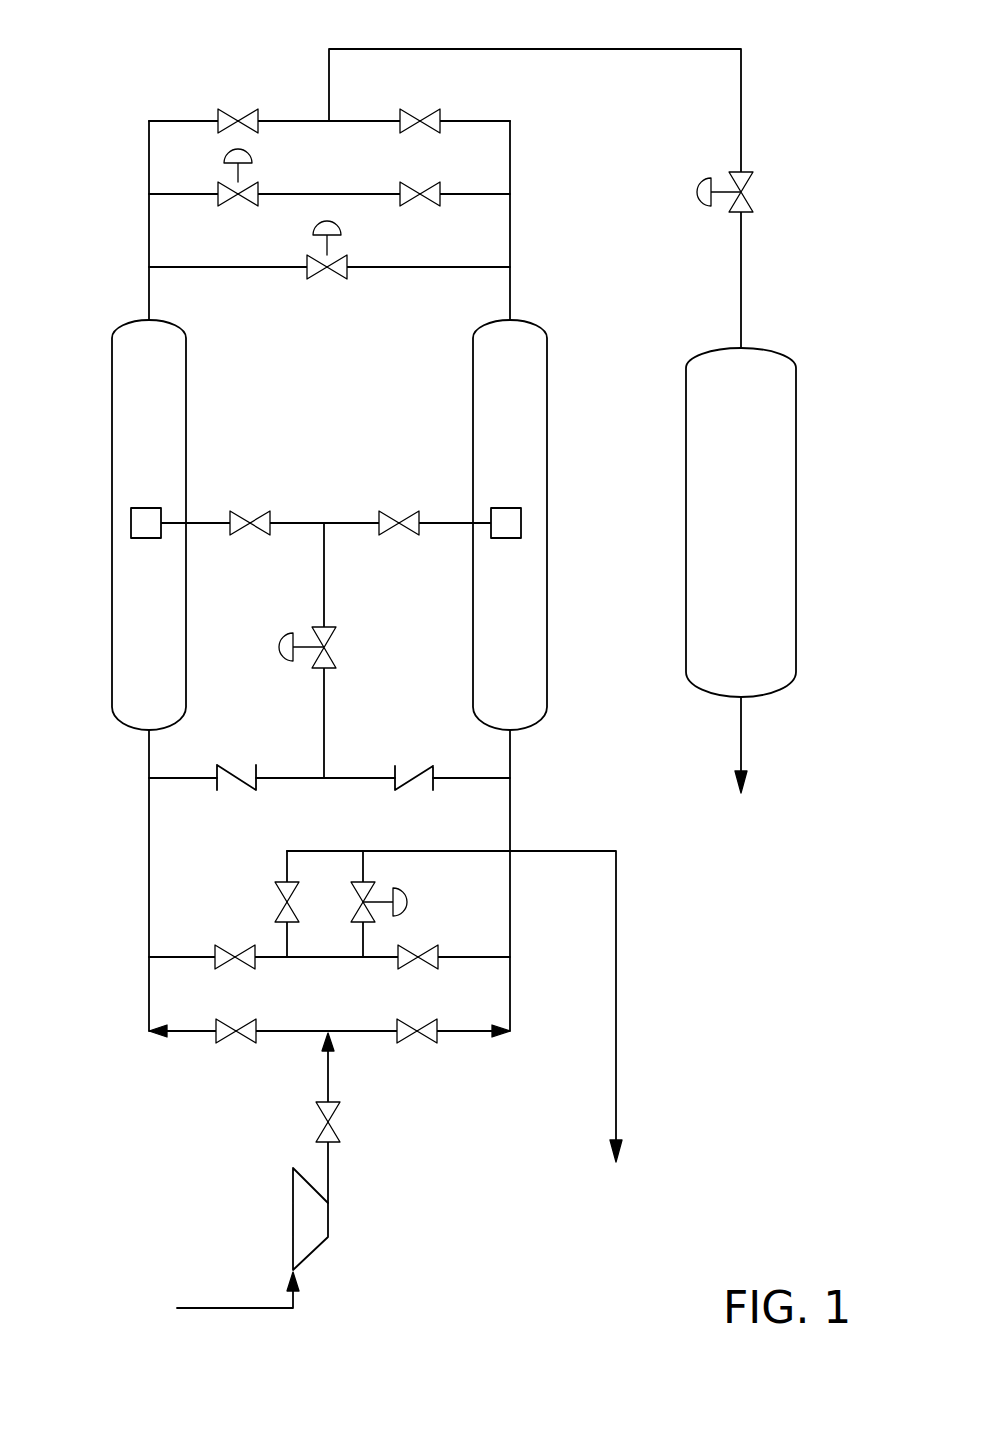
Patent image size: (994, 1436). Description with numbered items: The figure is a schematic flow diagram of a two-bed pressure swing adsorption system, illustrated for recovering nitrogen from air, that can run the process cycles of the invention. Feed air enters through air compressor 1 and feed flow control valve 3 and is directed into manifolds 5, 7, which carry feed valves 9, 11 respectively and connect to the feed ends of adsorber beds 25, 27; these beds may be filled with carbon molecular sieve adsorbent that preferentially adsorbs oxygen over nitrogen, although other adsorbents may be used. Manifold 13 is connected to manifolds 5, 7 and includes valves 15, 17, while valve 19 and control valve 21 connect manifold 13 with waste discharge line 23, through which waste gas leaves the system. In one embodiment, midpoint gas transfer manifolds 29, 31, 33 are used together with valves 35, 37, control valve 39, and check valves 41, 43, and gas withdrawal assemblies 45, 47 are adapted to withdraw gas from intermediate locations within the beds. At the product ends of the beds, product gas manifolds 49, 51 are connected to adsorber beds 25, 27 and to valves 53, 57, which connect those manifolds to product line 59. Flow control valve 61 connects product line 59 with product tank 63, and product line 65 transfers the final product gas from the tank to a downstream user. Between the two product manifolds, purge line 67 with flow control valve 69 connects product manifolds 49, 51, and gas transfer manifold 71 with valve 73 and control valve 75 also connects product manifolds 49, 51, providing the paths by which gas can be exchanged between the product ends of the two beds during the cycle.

The air compressor 1 is at (330, 1216).
The feed flow control valve 3 is at (330, 1121).
The manifold 5 is at (148, 888).
The manifold 7 is at (511, 815).
The feed valve 9 is at (242, 1017).
The feed valve 11 is at (423, 1020).
The manifold 13 is at (322, 958).
The valve 15 is at (226, 948).
The valve 17 is at (428, 948).
The valve 19 is at (276, 905).
The control valve 21 is at (413, 902).
The waste discharge line 23 is at (618, 987).
The adsorber bed 25 is at (112, 612).
The adsorber bed 27 is at (547, 605).
The midpoint gas transfer manifold 29 is at (292, 522).
The midpoint gas transfer manifold 31 is at (325, 590).
The midpoint gas transfer manifold 33 is at (290, 776).
The valve 35 is at (258, 537).
The valve 37 is at (403, 537).
The control valve 39 is at (278, 648).
The check valve 41 is at (240, 790).
The check valve 43 is at (418, 790).
The gas withdrawal assembly 45 is at (146, 508).
The gas withdrawal assembly 47 is at (506, 508).
The product gas manifold 49 is at (148, 235).
The product gas manifold 51 is at (511, 230).
The valve 53 is at (243, 110).
The valve 57 is at (417, 110).
The product line 59 is at (555, 48).
The flow control valve 61 is at (750, 200).
The product tank 63 is at (760, 533).
The product line 65 is at (744, 742).
The purge line 67 is at (268, 269).
The flow control valve 69 is at (328, 272).
The gas transfer manifold 71 is at (198, 193).
The valve 73 is at (413, 206).
The control valve 75 is at (244, 206).